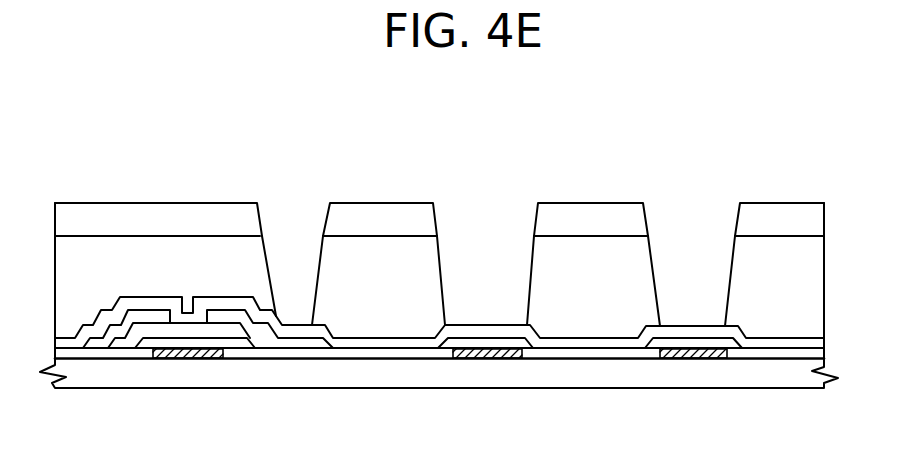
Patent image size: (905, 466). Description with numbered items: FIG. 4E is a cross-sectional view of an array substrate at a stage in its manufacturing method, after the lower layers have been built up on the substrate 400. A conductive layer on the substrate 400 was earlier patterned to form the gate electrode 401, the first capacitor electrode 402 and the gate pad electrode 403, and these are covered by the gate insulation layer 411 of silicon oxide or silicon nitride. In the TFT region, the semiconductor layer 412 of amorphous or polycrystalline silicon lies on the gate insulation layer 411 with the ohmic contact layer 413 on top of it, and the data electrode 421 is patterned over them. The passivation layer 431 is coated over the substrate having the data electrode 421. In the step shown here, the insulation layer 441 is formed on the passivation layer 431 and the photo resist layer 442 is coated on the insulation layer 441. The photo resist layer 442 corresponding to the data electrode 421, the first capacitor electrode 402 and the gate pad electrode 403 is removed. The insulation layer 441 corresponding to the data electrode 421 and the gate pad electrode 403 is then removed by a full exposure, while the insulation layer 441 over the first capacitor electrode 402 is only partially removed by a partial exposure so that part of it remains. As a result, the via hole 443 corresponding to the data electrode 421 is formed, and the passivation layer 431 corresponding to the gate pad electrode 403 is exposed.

The substrate 400 is at (97, 375).
The gate electrode 401 is at (187, 359).
The gate insulation layer 411 is at (422, 353).
The first capacitor electrode 402 is at (478, 360).
The gate pad electrode 403 is at (692, 359).
The semiconductor layer 412 is at (132, 348).
The ohmic contact layer 413 is at (248, 338).
The data electrode 421 is at (303, 346).
The passivation layer 431 is at (358, 343).
The insulation layer 441 is at (778, 257).
The photo resist layer 442 is at (807, 215).
The via hole 443 is at (292, 272).